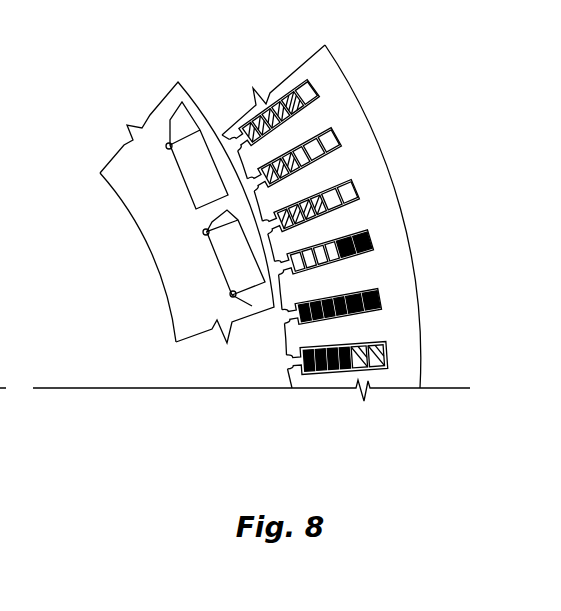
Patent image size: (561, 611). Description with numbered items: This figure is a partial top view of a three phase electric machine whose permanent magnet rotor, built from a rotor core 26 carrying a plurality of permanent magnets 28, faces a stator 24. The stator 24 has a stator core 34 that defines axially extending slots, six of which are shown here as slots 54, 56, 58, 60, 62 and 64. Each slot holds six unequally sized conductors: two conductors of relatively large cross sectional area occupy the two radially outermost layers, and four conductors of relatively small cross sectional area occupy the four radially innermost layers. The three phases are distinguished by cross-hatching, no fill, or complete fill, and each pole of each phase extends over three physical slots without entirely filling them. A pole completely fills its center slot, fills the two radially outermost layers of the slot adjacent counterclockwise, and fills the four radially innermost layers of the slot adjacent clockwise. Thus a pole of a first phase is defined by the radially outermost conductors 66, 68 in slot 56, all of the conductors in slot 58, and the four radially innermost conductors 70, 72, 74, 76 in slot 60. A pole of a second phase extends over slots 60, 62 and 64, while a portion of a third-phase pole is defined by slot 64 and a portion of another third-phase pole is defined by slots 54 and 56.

The stator 24 is at (167, 212).
The rotor core 26 is at (146, 240).
The permanent magnets 28 is at (238, 271).
The stator core 34 is at (343, 215).
The slot 54 is at (318, 90).
The slot 56 is at (338, 134).
The slot 58 is at (362, 190).
The slot 60 is at (365, 239).
The slot 62 is at (382, 300).
The slot 64 is at (388, 358).
The radially outermost conductor 66 is at (305, 142).
The radially outermost conductor 68 is at (333, 131).
The radially innermost conductor 70 is at (280, 294).
The radially innermost conductor 72 is at (296, 291).
The radially innermost conductor 74 is at (306, 247).
The radially innermost conductor 76 is at (352, 260).